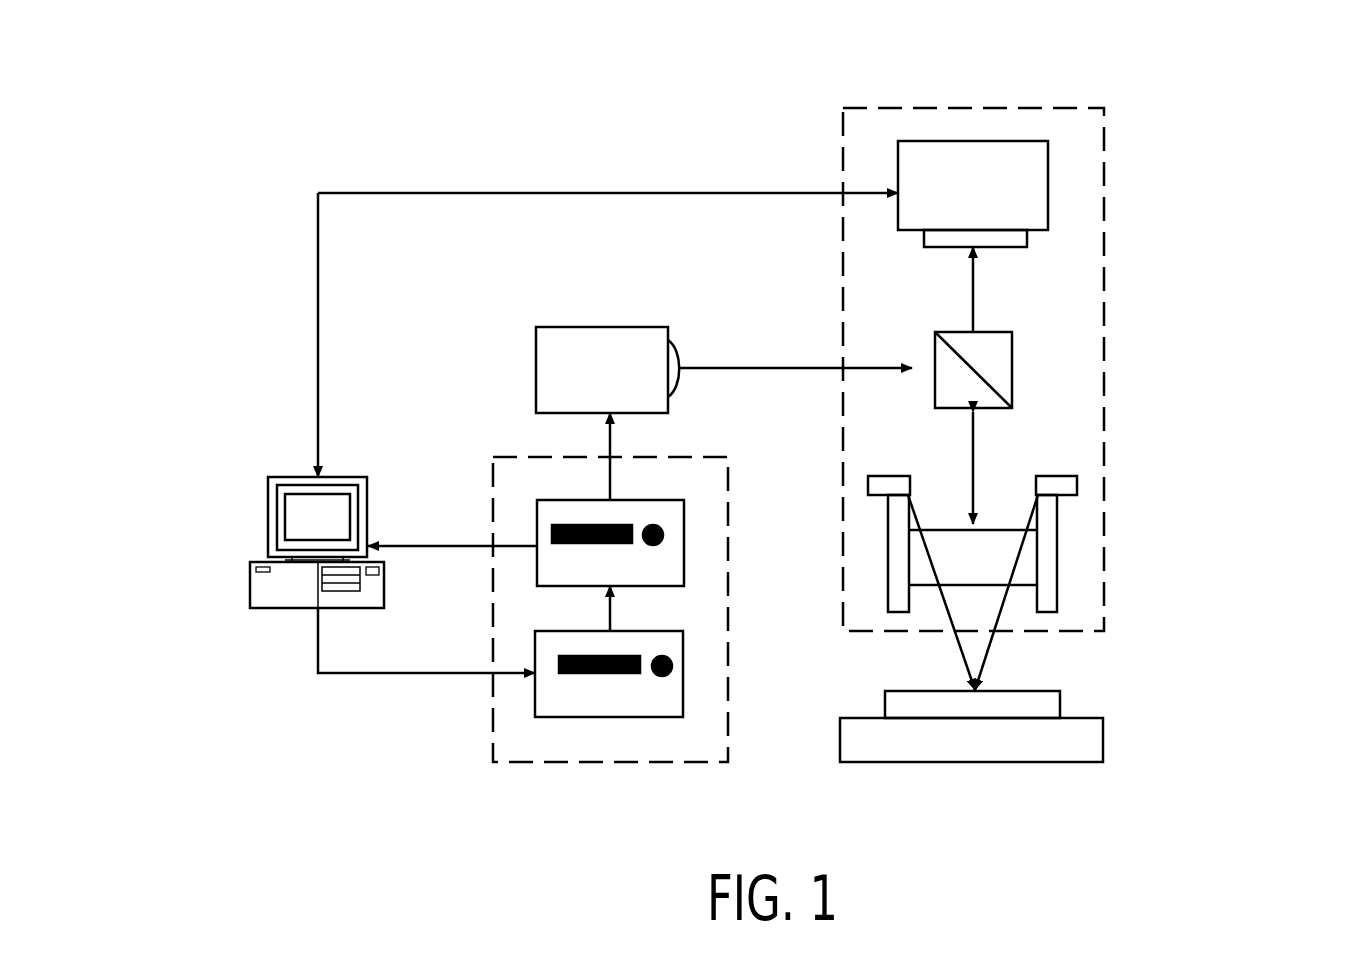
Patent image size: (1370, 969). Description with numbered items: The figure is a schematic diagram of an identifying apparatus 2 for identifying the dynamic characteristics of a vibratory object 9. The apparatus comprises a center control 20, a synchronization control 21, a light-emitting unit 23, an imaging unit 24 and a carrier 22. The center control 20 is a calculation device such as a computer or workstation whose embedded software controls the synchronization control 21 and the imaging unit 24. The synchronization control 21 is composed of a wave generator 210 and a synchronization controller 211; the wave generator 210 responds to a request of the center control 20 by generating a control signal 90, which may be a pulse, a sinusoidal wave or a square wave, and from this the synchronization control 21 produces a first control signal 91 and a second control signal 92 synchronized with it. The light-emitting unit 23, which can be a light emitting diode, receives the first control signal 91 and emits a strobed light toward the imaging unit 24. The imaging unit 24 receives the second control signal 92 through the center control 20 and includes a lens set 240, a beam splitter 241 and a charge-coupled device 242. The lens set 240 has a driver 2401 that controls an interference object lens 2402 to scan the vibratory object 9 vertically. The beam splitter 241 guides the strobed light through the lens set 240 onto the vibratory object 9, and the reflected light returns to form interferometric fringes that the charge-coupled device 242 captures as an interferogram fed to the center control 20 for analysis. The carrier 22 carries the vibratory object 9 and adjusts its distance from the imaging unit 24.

The identifying apparatus 2 is at (370, 150).
The center control 20 is at (268, 497).
The synchronization control 21 is at (490, 738).
The wave generator 210 is at (545, 642).
The synchronization controller 211 is at (545, 525).
The carrier 22 is at (1087, 730).
The light-emitting unit 23 is at (540, 334).
The imaging unit 24 is at (1105, 333).
The lens set 240 is at (1253, 508).
The driver 2401 is at (1062, 483).
The interference object lens 2402 is at (1050, 527).
The beam splitter 241 is at (940, 348).
The charge-coupled device (CCD) 242 is at (967, 158).
The vibratory object 9 is at (1057, 700).
The control signal 90 is at (612, 623).
The first control signal 91 is at (608, 484).
The second control signal 92 is at (450, 545).